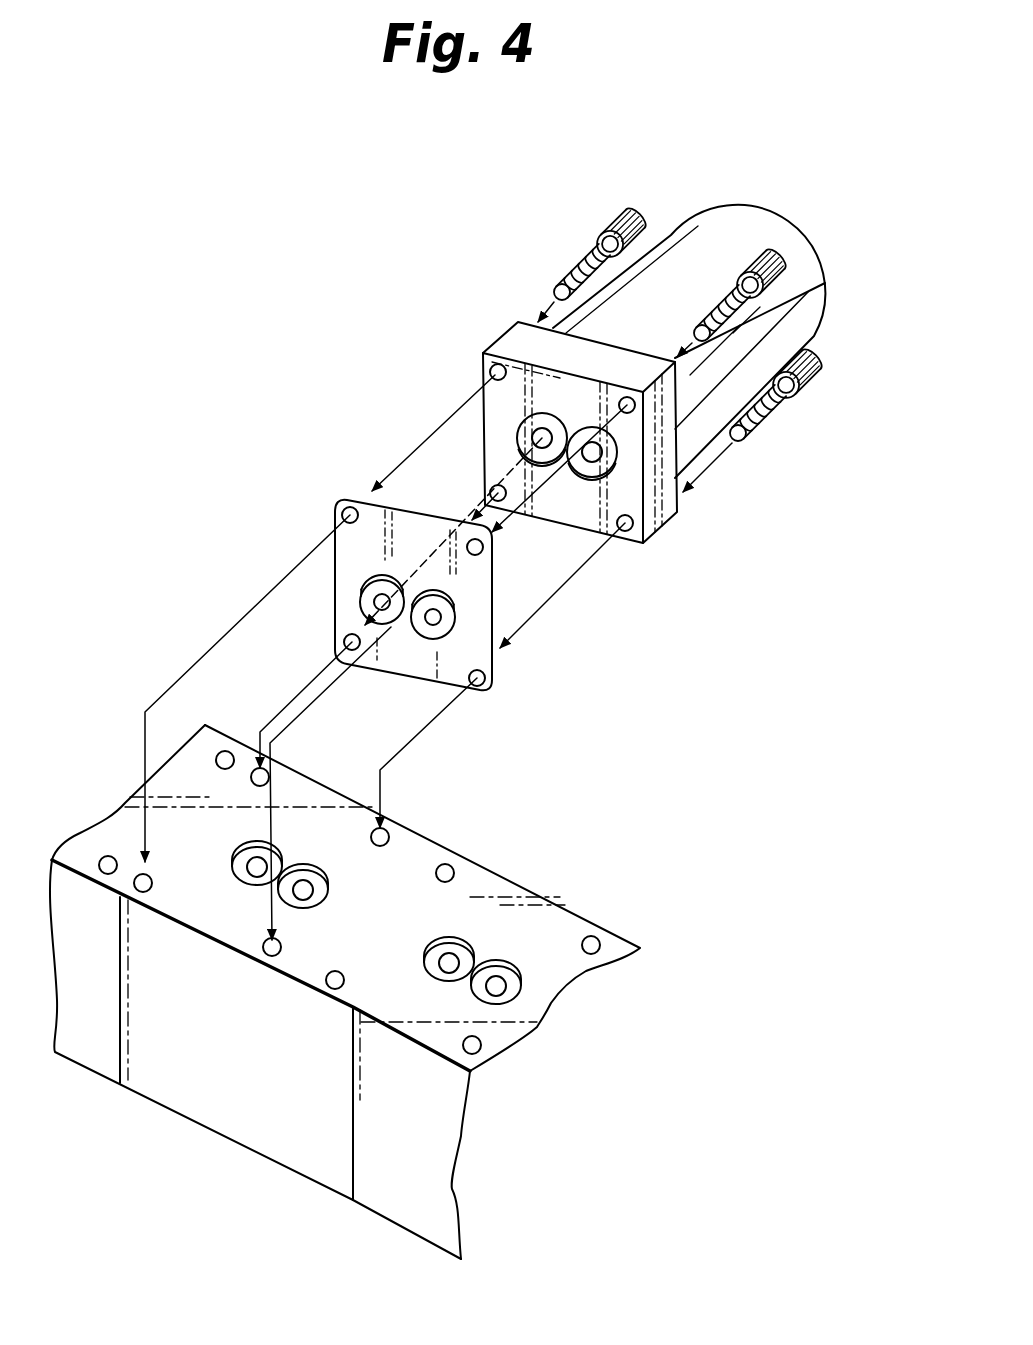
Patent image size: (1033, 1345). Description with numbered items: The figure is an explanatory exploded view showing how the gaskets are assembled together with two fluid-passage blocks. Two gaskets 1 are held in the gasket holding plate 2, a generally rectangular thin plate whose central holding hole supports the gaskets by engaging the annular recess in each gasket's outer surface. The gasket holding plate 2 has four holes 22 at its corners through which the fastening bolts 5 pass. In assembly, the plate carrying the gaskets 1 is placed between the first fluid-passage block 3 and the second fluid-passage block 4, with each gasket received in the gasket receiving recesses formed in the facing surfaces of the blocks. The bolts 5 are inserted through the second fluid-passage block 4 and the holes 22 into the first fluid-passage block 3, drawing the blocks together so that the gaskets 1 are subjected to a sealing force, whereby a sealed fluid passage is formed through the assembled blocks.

The gasket 1 is at (366, 608).
The gasket holding plate 2 is at (416, 588).
The hole 22 is at (345, 507).
The first fluid-passage block 3 is at (122, 818).
The second fluid-passage block 4 is at (485, 352).
The bolt 5 is at (596, 250).